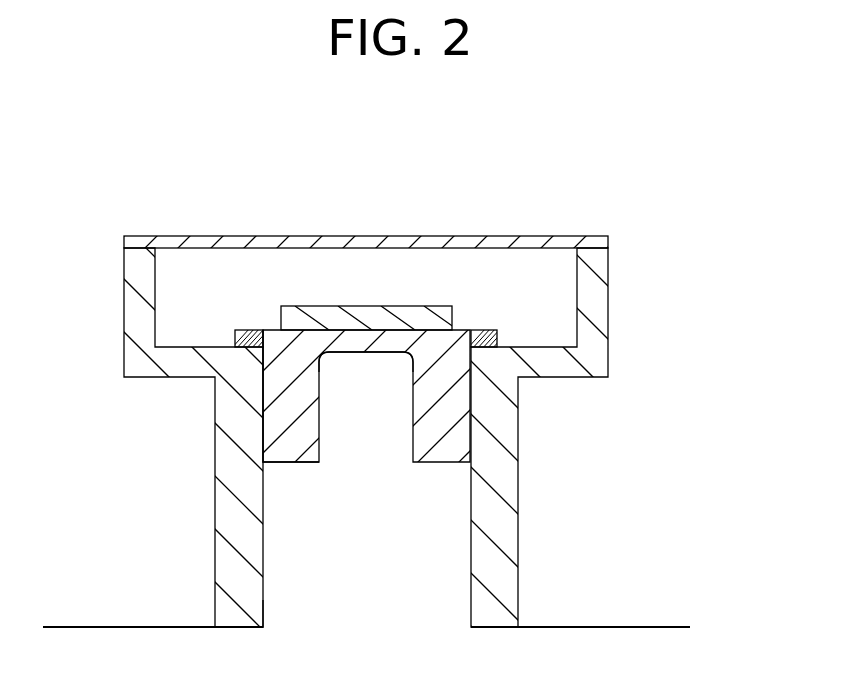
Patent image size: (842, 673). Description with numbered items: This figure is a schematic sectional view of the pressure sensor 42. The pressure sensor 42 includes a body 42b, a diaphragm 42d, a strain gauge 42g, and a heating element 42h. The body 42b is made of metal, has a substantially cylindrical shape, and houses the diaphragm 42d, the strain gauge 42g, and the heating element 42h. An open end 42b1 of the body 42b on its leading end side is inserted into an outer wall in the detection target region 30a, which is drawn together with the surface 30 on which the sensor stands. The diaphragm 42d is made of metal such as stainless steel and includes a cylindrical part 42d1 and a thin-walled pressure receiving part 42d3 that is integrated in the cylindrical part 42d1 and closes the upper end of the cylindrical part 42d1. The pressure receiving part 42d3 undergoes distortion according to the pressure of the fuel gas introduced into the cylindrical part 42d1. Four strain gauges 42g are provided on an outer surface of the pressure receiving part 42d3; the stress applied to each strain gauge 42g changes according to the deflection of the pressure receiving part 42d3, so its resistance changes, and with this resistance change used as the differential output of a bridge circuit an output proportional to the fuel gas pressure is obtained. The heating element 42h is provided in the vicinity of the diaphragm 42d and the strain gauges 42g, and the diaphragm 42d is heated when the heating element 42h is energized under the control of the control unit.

The base plate 30 is at (613, 627).
The detection target region 30a is at (667, 627).
The pressure sensor 42 is at (640, 407).
The body 42b is at (510, 493).
The open end 42b1 is at (263, 605).
The diaphragm 42d is at (472, 422).
The cylindrical part 42d1 is at (285, 412).
The pressure receiving part 42d3 is at (378, 353).
The strain gauge 42g is at (417, 306).
The heating element 42h is at (235, 330).